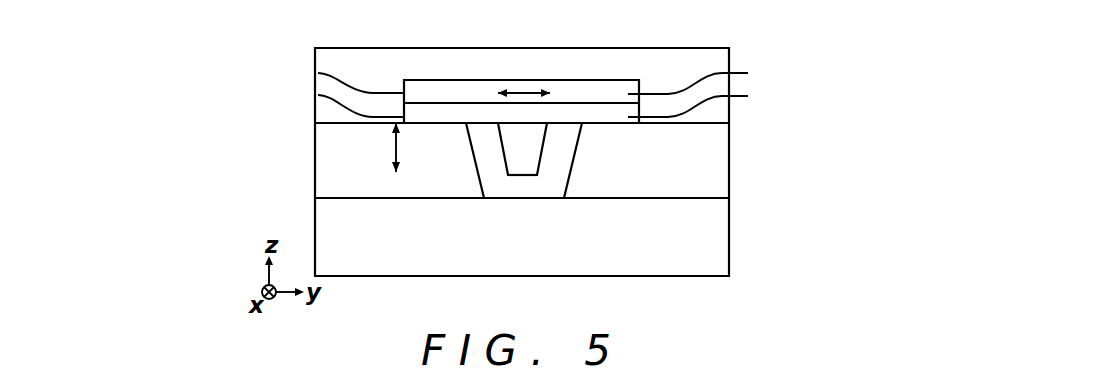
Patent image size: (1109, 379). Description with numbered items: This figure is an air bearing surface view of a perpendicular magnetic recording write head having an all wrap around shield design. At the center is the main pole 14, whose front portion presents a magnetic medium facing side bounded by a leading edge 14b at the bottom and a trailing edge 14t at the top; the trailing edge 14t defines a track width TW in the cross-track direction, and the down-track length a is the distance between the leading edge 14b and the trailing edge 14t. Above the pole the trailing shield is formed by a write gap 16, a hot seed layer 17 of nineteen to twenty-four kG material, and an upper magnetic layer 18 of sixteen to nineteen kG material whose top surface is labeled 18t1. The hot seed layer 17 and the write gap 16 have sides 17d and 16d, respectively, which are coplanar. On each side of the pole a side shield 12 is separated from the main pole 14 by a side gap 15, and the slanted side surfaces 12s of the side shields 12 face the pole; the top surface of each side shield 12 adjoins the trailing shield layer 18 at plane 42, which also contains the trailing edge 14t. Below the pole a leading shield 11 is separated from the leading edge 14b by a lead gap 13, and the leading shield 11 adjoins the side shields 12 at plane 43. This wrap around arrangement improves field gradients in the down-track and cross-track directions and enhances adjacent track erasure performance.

The leading shield 11 is at (718, 237).
The side shield 12 is at (325, 161).
The side surface of insulating layer groove 12s is at (572, 168).
The lead gap 13 is at (531, 185).
The main pole 14 is at (517, 155).
The trailing edge 14t is at (532, 123).
The leading edge 14b is at (525, 182).
The side gap 15 is at (482, 138).
The write gap 16 is at (587, 99).
The side of write gap 16d is at (318, 95).
The hot seed layer 17 is at (587, 91).
The side of hot seed layer 17d is at (318, 73).
The trailing shield magnetic layer 18 is at (617, 62).
The top surface of upper layer 18t1 is at (522, 48).
The plane 42- 42 is at (312, 123).
The plane 43- 43 is at (312, 198).
The track width TW is at (524, 76).
The down-track length a is at (389, 147).